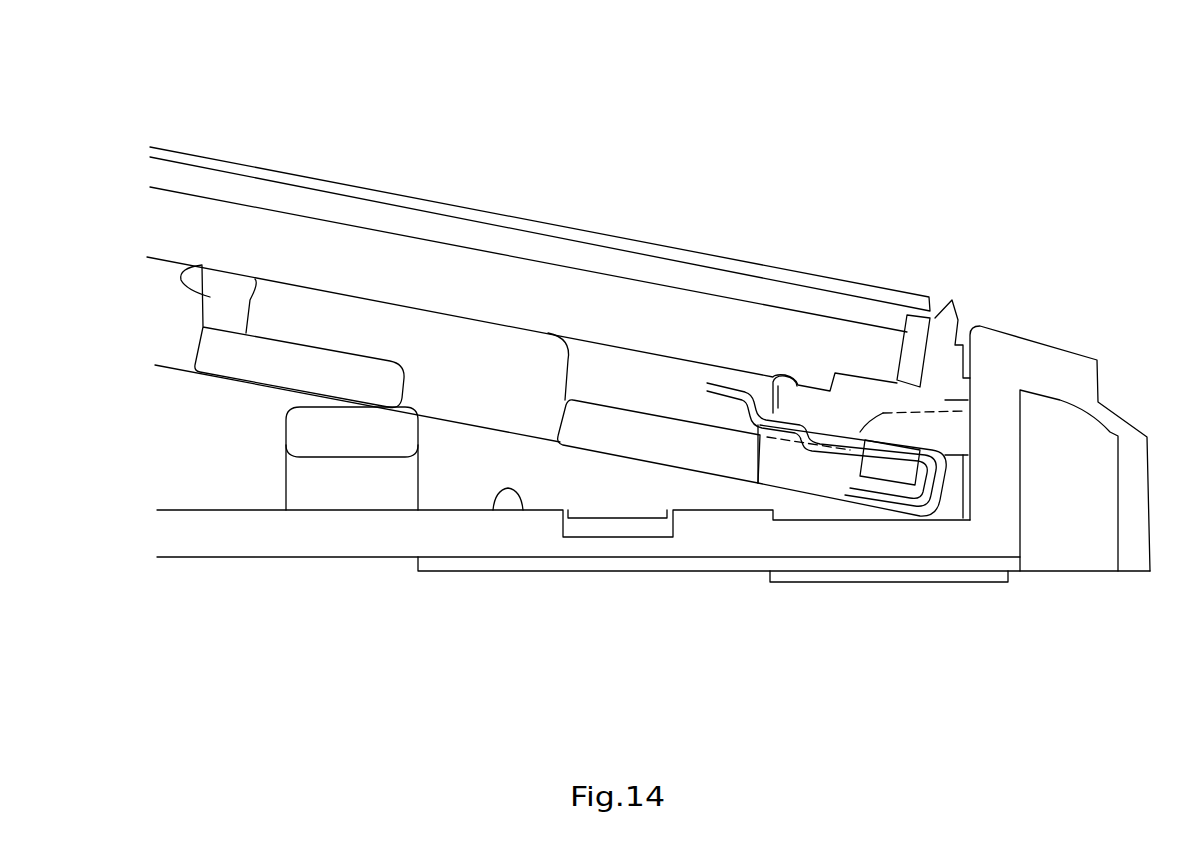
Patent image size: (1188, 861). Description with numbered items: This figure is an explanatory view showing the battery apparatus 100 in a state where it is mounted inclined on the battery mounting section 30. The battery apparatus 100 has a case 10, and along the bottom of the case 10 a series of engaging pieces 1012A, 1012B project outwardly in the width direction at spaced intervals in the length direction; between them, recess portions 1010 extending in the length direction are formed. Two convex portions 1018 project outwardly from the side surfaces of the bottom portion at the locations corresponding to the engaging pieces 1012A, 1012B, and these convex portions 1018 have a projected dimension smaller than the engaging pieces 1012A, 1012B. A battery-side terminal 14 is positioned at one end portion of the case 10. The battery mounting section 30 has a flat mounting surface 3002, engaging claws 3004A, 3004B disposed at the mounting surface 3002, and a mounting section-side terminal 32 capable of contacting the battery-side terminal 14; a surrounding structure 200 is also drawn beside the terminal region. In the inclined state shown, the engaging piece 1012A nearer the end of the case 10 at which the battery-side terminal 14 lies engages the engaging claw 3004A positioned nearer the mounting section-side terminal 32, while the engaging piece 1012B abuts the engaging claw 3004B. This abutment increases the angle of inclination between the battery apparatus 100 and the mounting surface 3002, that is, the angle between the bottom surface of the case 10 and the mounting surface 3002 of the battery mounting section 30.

The case 10 is at (405, 194).
The battery apparatus 100 is at (527, 210).
The recess portion 1010 is at (497, 353).
The convex portion 1018 is at (183, 260).
The engaging piece 1012B is at (312, 347).
The engaging piece 1012A is at (658, 413).
The battery-side terminal 14 is at (830, 463).
The mounting section-side terminal 32 is at (957, 400).
The engaging claw 3004A is at (958, 445).
The mating housing 200 is at (1080, 335).
The battery mounting section 30 is at (168, 482).
The engaging claw 3004B is at (352, 435).
The mounting surface 3002 is at (523, 510).